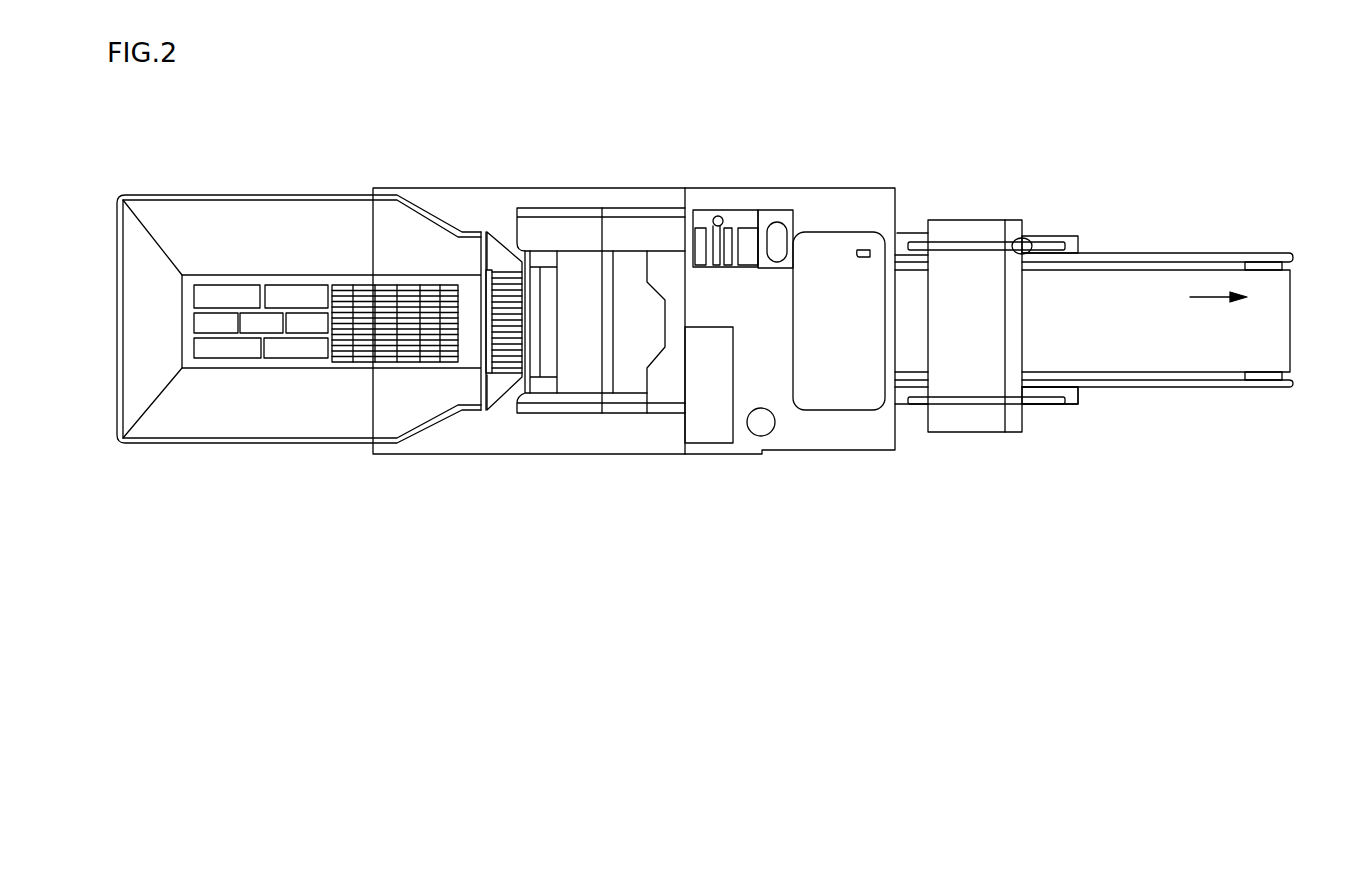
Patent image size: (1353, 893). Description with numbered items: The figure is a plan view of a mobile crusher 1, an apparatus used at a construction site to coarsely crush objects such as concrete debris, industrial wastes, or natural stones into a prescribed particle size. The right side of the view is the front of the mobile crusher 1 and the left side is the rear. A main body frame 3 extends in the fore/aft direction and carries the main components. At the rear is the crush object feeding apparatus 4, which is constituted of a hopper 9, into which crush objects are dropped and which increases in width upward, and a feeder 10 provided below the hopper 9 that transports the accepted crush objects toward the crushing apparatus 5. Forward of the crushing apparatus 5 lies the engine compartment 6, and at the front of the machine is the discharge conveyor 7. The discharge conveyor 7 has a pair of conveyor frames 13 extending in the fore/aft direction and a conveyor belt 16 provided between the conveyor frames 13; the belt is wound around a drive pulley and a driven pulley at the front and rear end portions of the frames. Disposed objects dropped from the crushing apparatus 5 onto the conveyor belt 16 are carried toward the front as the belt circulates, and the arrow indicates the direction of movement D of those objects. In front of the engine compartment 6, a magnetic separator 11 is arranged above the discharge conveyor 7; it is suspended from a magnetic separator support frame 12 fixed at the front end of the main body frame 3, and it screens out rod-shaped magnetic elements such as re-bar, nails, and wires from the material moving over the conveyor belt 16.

The mobile crusher 1 is at (1101, 147).
The main body frame 3 is at (1081, 399).
The crush object feeding apparatus 4 is at (301, 358).
The crushing apparatus 5 is at (503, 378).
The engine compartment 6 is at (853, 452).
The discharge conveyor 7 is at (1157, 312).
The hopper 9 is at (277, 425).
The feeder 10 is at (367, 363).
The magnetic separator 11 is at (957, 219).
The magnetic separator support frame 12 is at (973, 437).
The conveyor frames 13 is at (1216, 385).
The conveyor belt 16 is at (1165, 333).
The direction of movement D is at (1213, 296).